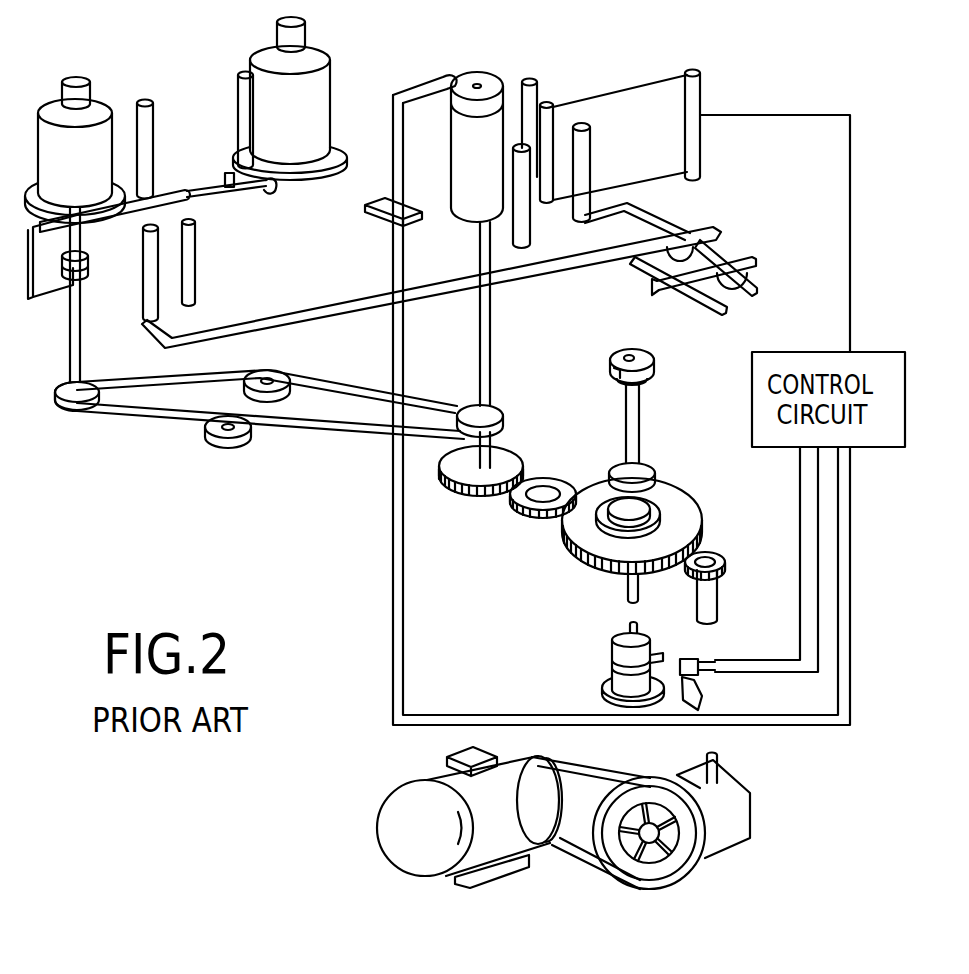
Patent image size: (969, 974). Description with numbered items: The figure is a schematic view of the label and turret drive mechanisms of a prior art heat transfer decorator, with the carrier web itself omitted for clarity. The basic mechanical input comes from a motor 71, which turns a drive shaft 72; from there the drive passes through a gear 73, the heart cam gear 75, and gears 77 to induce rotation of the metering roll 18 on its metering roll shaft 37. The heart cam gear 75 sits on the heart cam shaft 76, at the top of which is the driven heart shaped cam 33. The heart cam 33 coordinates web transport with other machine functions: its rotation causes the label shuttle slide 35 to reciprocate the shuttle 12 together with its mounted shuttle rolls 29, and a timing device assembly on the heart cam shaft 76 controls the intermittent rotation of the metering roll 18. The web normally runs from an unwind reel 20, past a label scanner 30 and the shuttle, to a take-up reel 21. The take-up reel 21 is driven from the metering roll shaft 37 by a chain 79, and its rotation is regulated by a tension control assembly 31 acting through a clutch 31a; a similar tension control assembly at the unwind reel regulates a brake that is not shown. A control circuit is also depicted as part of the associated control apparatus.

The shuttle 12 is at (342, 312).
The metering roll 18 is at (458, 203).
The unwind reel 20 is at (330, 72).
The take-up reel 21 is at (113, 101).
The shuttle roll 29 is at (158, 263).
The label scanner 30 is at (617, 105).
The tension control assembly 31 is at (238, 133).
The clutch 31a is at (88, 262).
The heart shaped cam 33 is at (631, 348).
The label shuttle slide 35 is at (765, 280).
The metering roll shaft 37 is at (490, 329).
The motor 71 is at (447, 763).
The drive shaft 72 is at (718, 760).
The gear 73 is at (712, 592).
The heart cam gear 75 is at (685, 510).
The heart cam shaft 76 is at (639, 425).
The gears 77 is at (478, 503).
The chain 79 is at (296, 426).